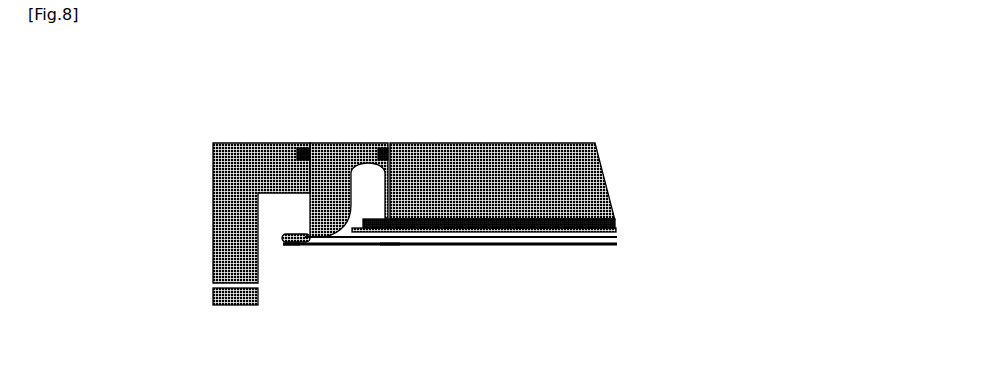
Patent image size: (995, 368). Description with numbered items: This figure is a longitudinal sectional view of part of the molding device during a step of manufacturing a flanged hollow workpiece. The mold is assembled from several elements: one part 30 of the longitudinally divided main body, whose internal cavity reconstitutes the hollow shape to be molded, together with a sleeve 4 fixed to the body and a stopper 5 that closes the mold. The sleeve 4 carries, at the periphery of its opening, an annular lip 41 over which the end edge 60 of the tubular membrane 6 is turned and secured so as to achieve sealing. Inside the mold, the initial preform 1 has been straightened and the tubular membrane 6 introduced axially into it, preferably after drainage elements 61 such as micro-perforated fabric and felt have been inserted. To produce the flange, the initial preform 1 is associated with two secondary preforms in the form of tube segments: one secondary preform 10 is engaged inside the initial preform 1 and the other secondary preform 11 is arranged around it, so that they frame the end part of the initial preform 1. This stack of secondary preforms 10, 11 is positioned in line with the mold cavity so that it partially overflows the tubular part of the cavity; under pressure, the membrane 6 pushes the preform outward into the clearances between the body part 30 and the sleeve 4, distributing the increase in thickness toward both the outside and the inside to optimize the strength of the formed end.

The initial preform 1 is at (512, 229).
The sleeve 4 is at (332, 163).
The stopper 5 is at (245, 162).
The tubular membrane 6 is at (390, 244).
The secondary preform 10 is at (445, 233).
The secondary preform 11 is at (382, 212).
The part of the main body 30 is at (552, 178).
The annular lip 41 is at (290, 244).
The end edge of the membrane 60 is at (293, 244).
The drainage element 61 is at (493, 231).